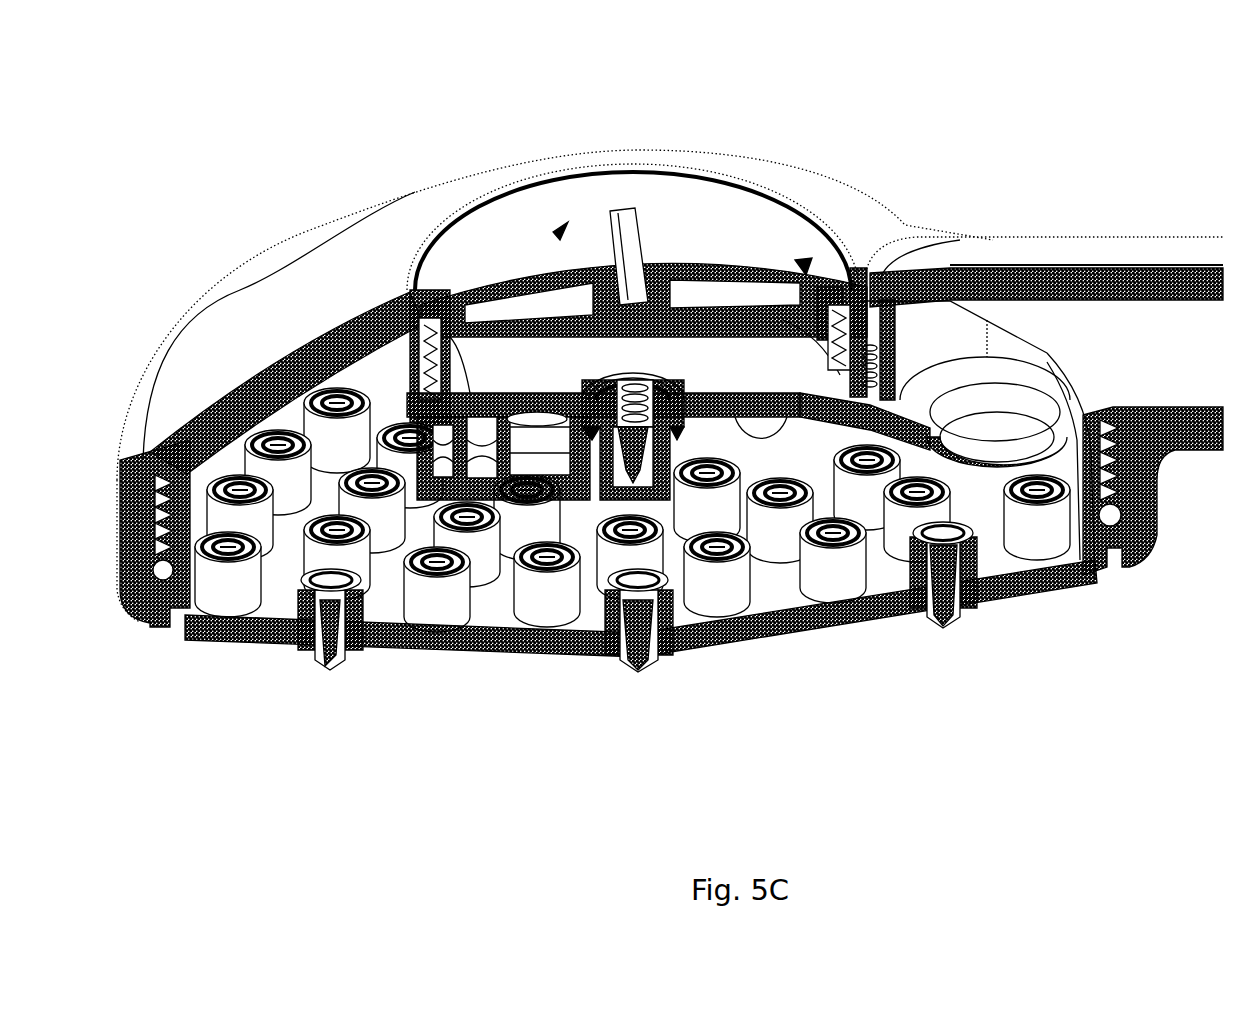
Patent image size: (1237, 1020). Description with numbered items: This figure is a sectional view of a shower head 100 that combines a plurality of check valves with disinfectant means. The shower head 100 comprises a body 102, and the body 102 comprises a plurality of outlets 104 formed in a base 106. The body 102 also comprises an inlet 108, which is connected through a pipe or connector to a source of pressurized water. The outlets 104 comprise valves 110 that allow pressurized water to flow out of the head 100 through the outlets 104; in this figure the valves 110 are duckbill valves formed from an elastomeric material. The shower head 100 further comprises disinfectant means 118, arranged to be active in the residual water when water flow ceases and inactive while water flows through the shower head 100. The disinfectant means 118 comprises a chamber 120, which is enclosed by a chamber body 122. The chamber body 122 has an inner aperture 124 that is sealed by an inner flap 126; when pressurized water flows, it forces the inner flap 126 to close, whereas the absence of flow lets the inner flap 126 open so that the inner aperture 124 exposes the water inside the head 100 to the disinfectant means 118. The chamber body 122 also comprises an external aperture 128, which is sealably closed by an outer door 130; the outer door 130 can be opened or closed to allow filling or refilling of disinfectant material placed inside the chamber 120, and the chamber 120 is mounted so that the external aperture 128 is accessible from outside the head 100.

The shower head 100 is at (268, 158).
The body 102 is at (235, 325).
The outlets 104 is at (620, 642).
The base 106 is at (845, 645).
The inlet 108 is at (1020, 312).
The valves 110 is at (330, 640).
The disinfectant means 118 is at (553, 140).
The chamber 120 is at (520, 362).
The chamber body 122 is at (862, 345).
The inner aperture 124 is at (622, 372).
The inner flap 126 is at (965, 432).
The external aperture 128 is at (812, 290).
The outer door 130 is at (680, 232).